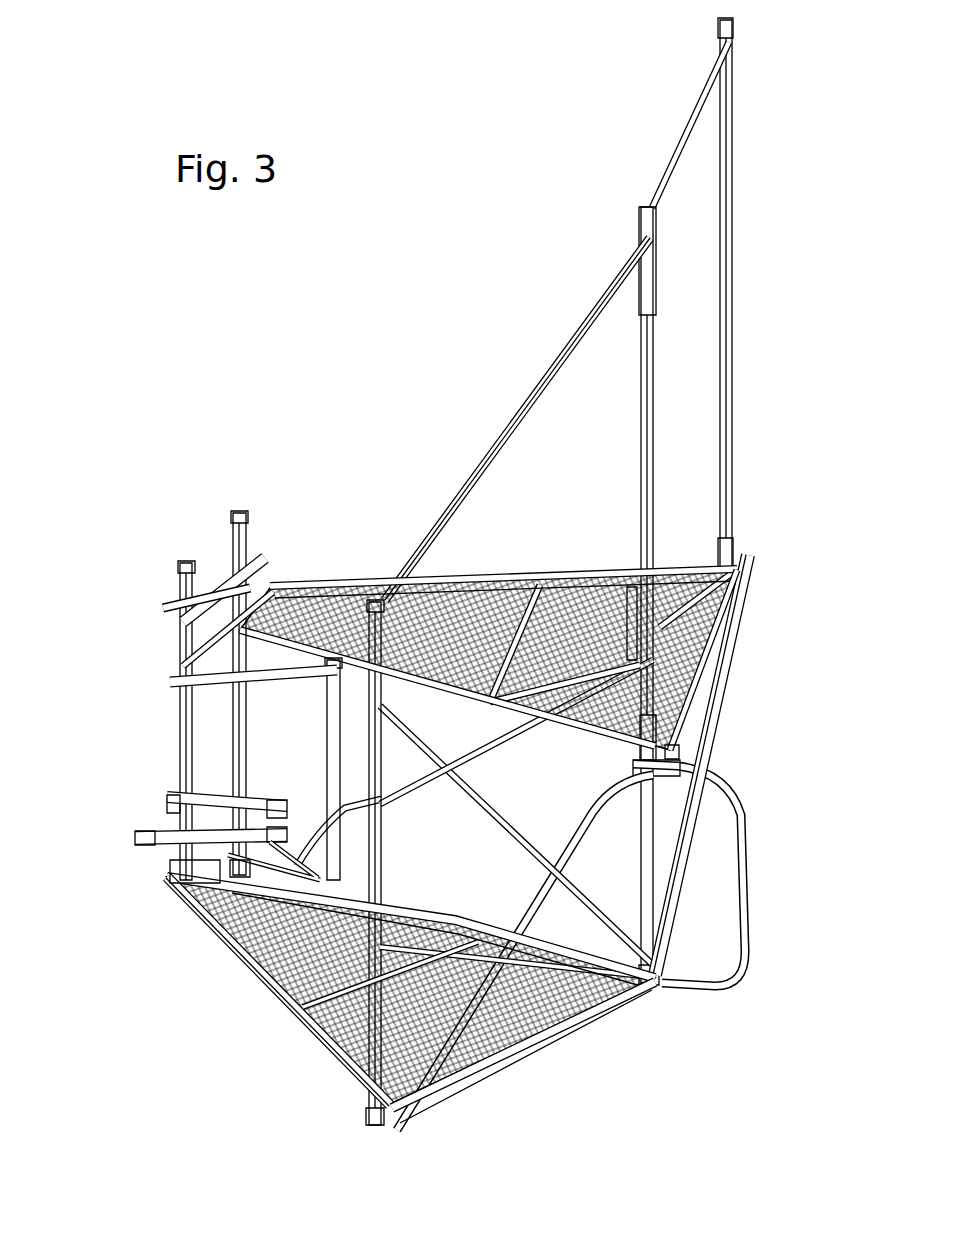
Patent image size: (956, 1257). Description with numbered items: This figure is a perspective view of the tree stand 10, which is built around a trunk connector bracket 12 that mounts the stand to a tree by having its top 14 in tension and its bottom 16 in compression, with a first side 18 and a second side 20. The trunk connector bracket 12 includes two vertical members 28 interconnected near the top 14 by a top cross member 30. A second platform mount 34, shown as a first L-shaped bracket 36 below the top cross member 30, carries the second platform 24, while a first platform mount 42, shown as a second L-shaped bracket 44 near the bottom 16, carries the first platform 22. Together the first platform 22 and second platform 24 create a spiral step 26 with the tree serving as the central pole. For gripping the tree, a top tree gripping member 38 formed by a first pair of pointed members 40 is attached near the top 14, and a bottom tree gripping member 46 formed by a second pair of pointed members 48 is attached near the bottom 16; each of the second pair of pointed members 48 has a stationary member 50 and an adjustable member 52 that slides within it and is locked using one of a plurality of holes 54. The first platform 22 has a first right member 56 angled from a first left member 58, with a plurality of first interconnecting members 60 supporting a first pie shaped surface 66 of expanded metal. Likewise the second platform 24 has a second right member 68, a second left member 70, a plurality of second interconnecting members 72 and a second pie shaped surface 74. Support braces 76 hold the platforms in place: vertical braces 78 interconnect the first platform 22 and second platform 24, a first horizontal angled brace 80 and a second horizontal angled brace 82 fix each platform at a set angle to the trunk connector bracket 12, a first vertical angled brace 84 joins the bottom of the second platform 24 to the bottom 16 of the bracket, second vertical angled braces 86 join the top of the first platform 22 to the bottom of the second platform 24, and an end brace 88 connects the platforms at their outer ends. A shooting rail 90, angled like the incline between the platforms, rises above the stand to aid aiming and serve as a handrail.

The tree stand 10 is at (400, 262).
The trunk connector bracket 12 is at (95, 708).
The top 14 is at (205, 408).
The bottom 16 is at (168, 913).
The first side 18 is at (150, 767).
The second side 20 is at (268, 742).
The first platform 22 is at (295, 1076).
The second platform 24 is at (403, 508).
The spiral step 26 is at (790, 924).
The vertical members 28 is at (190, 755).
The top cross member 30 is at (170, 618).
The second platform mount 34 is at (185, 666).
The first L-shaped bracket 36 is at (228, 629).
The top tree gripping member 38 is at (110, 505).
The first pair of pointed members 40 is at (200, 588).
The first platform mount 42 is at (200, 872).
The second L-shaped bracket 44 is at (210, 871).
The bottom tree gripping member 46 is at (130, 803).
The second pair of pointed members 48 is at (160, 836).
The stationary member 50 is at (262, 810).
The adjustable member 52 is at (211, 838).
The holes 54 is at (235, 830).
The first right member 56 is at (440, 907).
The first left member 58 is at (280, 1002).
The first interconnecting members 60 is at (306, 972).
The first pie shaped surface 66 is at (535, 968).
The second right member 68 is at (512, 620).
The second left member 70 is at (577, 734).
The second interconnecting members 72 is at (516, 622).
The second pie shaped surface 74 is at (574, 615).
The support braces 76 is at (722, 1052).
The vertical braces 78 is at (336, 832).
The first horizontal angled brace 80 is at (294, 834).
The second horizontal angled brace 82 is at (232, 698).
The first vertical angled brace 84 is at (470, 762).
The second vertical angled braces 86 is at (468, 812).
The end brace 88 is at (738, 960).
The shooting rail 90 is at (528, 402).